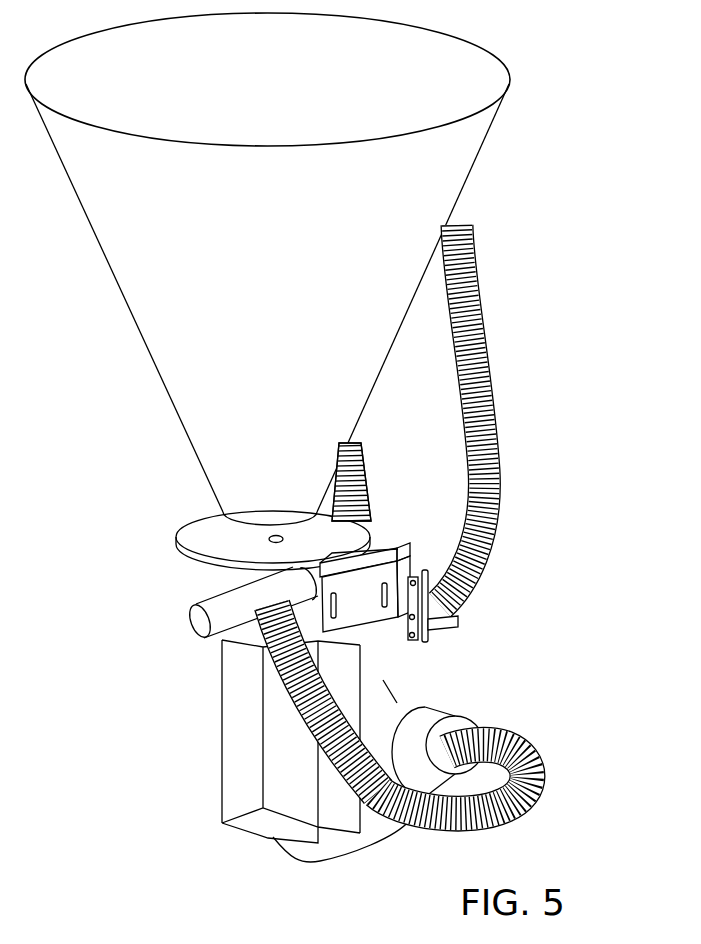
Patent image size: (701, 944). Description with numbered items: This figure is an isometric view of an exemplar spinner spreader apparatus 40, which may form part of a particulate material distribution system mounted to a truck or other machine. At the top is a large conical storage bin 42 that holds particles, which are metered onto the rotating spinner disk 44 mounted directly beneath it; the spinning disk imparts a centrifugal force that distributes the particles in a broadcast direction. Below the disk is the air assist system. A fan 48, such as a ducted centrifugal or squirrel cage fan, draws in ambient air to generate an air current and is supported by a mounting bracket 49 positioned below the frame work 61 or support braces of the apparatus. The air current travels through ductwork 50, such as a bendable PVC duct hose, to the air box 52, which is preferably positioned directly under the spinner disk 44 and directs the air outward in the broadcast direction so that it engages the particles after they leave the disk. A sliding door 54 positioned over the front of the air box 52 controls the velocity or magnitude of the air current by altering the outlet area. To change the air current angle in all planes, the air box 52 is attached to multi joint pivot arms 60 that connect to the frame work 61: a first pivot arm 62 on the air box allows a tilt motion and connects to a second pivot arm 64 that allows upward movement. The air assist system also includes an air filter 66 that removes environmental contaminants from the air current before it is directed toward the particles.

The spinner spreader apparatus 40 is at (445, 537).
The storage bin 42 is at (171, 354).
The spinner disk 44 is at (200, 540).
The fan 48 is at (397, 704).
The mounting bracket 49 is at (238, 746).
The ductwork 50 is at (477, 802).
The air box 52 is at (390, 553).
The sliding door 54 is at (368, 615).
The multi joint pivot arms 60 is at (440, 618).
The frame work 61 is at (462, 465).
The first pivot arm 62 is at (425, 570).
The second pivot arm 64 is at (432, 637).
The air filter 66 is at (212, 572).